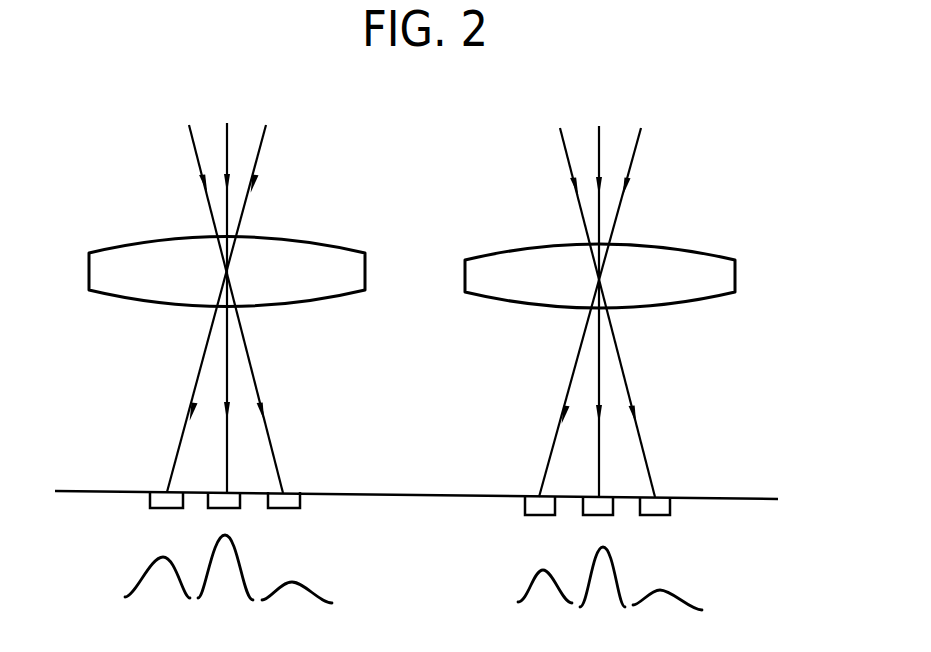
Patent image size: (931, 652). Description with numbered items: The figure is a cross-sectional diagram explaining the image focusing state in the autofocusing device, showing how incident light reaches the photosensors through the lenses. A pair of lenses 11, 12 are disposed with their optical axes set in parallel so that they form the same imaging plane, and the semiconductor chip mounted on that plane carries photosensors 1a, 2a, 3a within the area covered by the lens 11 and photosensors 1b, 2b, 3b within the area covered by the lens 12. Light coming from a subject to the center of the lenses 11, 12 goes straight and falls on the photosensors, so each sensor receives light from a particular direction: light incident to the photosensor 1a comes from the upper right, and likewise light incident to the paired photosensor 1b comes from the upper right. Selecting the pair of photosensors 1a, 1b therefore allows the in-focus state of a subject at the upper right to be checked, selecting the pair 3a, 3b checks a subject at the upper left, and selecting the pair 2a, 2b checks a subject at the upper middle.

The lens 11 is at (335, 213).
The lens 12 is at (695, 252).
The photosensor 1a is at (148, 498).
The photosensor 2a is at (208, 502).
The photosensor 3a is at (300, 503).
The photosensor 1b is at (523, 505).
The photosensor 2b is at (582, 507).
The photosensor 3b is at (670, 507).